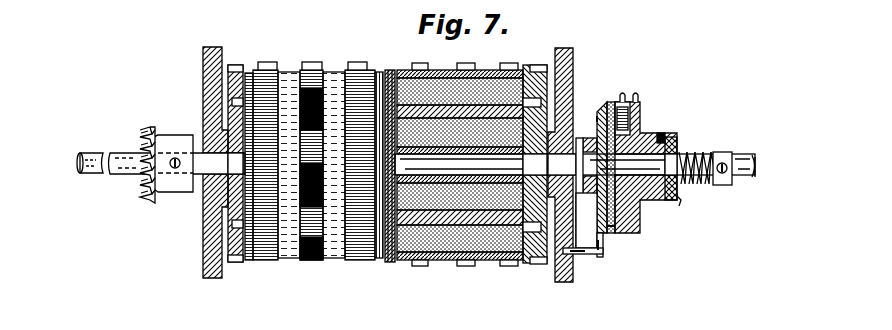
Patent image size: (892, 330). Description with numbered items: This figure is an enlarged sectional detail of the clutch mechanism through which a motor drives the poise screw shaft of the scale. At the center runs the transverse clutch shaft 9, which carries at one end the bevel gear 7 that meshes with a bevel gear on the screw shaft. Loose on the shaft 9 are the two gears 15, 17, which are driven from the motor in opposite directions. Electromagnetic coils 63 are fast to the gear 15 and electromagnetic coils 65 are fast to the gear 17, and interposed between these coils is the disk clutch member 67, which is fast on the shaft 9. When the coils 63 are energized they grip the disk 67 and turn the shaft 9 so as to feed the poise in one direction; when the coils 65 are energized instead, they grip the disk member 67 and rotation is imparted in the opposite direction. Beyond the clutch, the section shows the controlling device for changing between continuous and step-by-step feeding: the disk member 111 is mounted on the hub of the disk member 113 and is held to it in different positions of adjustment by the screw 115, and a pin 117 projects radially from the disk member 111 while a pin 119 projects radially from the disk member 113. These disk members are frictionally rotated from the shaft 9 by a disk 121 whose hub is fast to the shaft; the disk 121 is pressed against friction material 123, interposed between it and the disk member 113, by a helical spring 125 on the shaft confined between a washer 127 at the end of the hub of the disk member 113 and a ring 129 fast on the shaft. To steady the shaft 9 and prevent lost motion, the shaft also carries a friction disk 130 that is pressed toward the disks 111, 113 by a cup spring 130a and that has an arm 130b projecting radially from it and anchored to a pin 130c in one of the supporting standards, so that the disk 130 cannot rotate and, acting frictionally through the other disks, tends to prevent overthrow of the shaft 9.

The bevel gear 7 is at (140, 204).
The shaft 9 is at (218, 164).
The gear 15 is at (237, 263).
The gear 17 is at (535, 264).
The electromagnetic coils 63 is at (290, 261).
The electromagnetic coils 65 is at (442, 262).
The disk clutch member 67 is at (388, 263).
The disk member 111 is at (641, 107).
The disk member 113 is at (631, 121).
The screw 115 is at (662, 132).
The pin 117 is at (638, 100).
The pin 119 is at (624, 99).
The disk 121 is at (606, 234).
The friction material 123 is at (610, 230).
The helical spring 125 is at (692, 180).
The washer 127 is at (681, 205).
The ring 129 is at (723, 159).
The friction disk 130 is at (601, 102).
The cup spring 130a is at (596, 118).
The arm 130b is at (594, 250).
The pin 130c is at (577, 258).